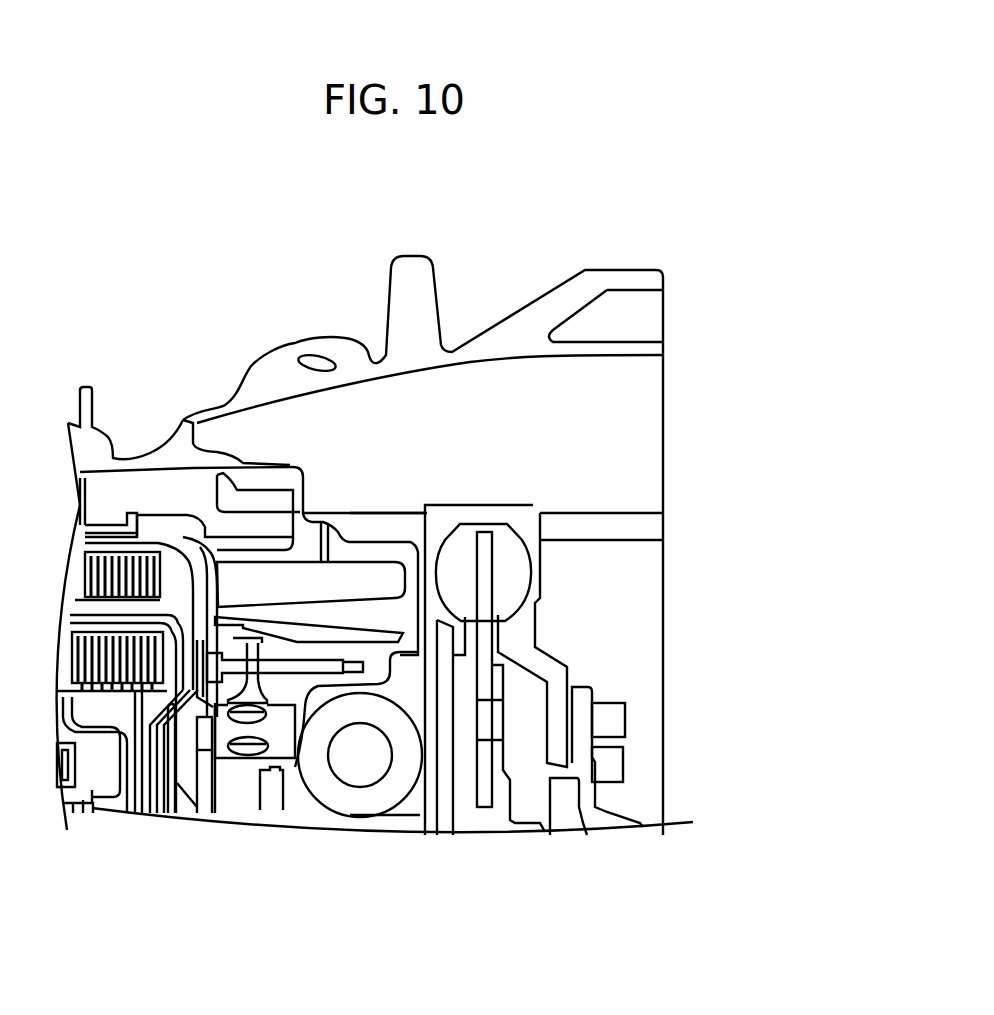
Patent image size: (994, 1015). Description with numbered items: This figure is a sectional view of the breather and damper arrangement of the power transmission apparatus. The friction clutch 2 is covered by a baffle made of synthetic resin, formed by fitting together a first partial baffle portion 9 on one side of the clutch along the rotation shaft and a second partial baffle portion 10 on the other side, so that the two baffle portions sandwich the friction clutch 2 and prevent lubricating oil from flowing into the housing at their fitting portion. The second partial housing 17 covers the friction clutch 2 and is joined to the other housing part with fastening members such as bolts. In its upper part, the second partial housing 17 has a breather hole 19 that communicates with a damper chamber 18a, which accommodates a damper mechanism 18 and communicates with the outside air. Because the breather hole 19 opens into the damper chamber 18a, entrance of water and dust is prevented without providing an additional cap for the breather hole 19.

The friction clutch 2 is at (137, 668).
The first partial baffle portion 9 is at (100, 525).
The second partial baffle portion 10 is at (175, 525).
The second partial housing 17 is at (383, 555).
The damper mechanism 18 is at (530, 543).
The damper chamber 18a is at (462, 472).
The breather hole 19 is at (325, 528).